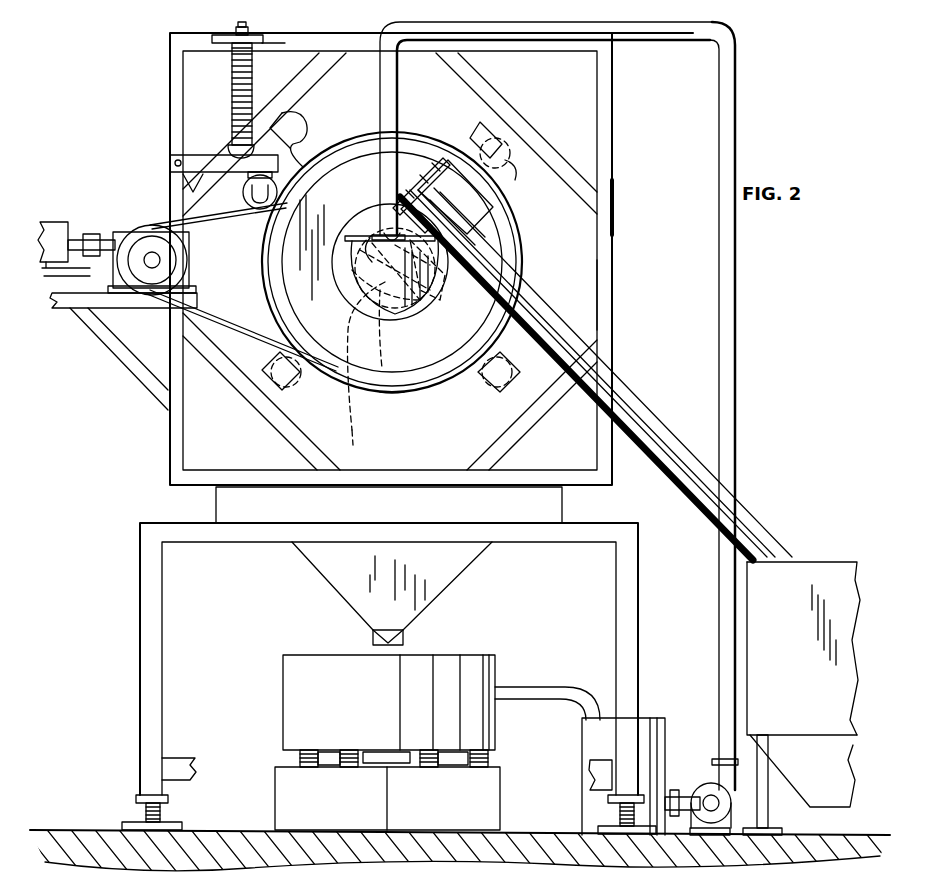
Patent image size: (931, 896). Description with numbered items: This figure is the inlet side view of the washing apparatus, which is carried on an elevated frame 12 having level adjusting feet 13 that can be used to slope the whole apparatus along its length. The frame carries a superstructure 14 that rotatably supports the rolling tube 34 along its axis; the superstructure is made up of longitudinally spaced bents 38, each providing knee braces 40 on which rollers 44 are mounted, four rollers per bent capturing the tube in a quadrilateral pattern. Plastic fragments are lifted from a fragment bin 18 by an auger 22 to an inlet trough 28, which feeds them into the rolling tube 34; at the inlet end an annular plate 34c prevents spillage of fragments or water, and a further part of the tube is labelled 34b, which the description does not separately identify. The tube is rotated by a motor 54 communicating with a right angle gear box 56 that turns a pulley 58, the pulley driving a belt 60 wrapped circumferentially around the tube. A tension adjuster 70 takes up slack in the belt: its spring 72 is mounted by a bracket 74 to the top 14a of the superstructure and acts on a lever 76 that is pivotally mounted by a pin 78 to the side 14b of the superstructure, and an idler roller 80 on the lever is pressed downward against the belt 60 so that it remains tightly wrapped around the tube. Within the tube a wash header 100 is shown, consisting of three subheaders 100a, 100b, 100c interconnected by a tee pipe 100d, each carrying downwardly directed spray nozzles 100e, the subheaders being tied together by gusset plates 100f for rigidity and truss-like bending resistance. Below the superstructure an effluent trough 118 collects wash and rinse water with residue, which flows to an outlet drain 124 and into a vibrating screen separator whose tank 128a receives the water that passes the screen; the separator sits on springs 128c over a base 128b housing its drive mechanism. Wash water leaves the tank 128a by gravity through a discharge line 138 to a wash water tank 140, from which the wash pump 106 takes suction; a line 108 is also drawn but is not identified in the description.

The elevated frame 12 is at (640, 597).
The level adjusting feet 13 is at (140, 808).
The superstructure 14 is at (300, 32).
The top of the superstructure 14a is at (352, 36).
The side of the superstructure 14b is at (170, 145).
The fragment bin 18 is at (795, 560).
The auger 22 is at (745, 510).
The inlet trough 28 is at (336, 288).
The rolling tube 34 is at (275, 308).
The drum portion 34b is at (807, 15).
The annular plate 34c is at (380, 392).
The bents 38 is at (613, 300).
The knee braces 40 is at (525, 118).
The rollers 44 is at (290, 130).
The motor 54 is at (52, 222).
The right angle gear box 56 is at (122, 232).
The pulley 58 is at (142, 308).
The belt 60 is at (170, 214).
The tension adjuster 70 is at (232, 96).
The spring 72 is at (255, 68).
The bracket 74 is at (255, 30).
The lever 76 is at (210, 155).
The pin 78 is at (170, 163).
The idler roller 80 is at (243, 188).
The wash header 100 is at (380, 237).
The subheader 100a is at (433, 165).
The subheader 100b is at (367, 437).
The subheader 100c is at (445, 248).
The tee pipe 100d is at (434, 288).
The spray nozzles 100e is at (358, 318).
The gusset plates 100f is at (336, 236).
The wash pump 106 is at (700, 784).
The supply pipe 108 is at (737, 259).
The effluent trough 118 is at (458, 566).
The outlet drain 124 is at (404, 638).
The tank 128a is at (283, 700).
The base 128b is at (364, 798).
The springs 128c is at (490, 755).
The discharge line 138 is at (540, 685).
The wash water tank 140 is at (668, 722).